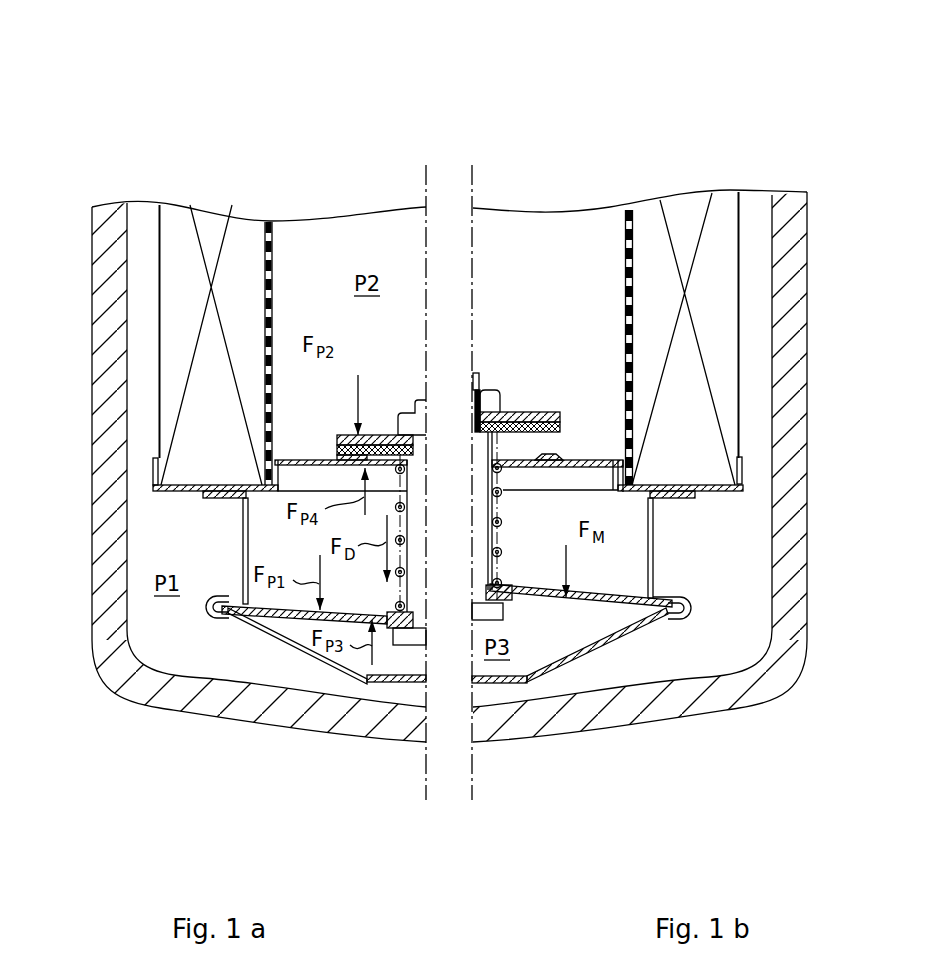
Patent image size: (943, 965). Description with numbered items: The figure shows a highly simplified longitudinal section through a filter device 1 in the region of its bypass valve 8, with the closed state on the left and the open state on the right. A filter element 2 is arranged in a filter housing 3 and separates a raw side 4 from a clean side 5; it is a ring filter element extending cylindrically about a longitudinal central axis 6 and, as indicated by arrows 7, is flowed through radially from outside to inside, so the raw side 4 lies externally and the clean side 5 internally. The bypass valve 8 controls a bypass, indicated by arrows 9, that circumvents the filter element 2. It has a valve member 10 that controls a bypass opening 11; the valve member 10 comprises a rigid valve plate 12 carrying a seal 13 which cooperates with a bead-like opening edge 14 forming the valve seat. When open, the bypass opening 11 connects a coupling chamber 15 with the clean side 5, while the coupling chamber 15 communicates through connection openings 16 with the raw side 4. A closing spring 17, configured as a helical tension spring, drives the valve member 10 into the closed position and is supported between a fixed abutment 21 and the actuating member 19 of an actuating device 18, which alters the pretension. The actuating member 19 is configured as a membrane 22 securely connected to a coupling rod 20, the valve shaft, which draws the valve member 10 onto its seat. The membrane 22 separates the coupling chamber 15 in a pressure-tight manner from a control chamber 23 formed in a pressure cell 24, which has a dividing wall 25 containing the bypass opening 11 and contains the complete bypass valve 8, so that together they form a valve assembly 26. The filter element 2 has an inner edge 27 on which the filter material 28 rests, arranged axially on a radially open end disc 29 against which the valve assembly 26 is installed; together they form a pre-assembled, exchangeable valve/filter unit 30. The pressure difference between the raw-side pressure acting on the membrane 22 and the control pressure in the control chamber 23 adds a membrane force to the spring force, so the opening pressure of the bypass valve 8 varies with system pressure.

In FIG. 1a, the filter device 1 is at (197, 117).
In FIG. 1b, the filter element 2 is at (745, 233).
In FIG. 1a, the filter housing 3 is at (100, 268).
In FIG. 1a, the raw side 4 is at (132, 328).
In FIG. 1b, the clean side 5 is at (505, 288).
In FIG. 1a, the longitudinal central axis 6 is at (426, 172).
In FIG. 1b, the longitudinal central axis 6 is at (472, 172).
In FIG. 1a, the arrows 7 is at (194, 296).
In FIG. 1a, the bypass valve 8 is at (197, 618).
In FIG. 1b, the arrows 9 is at (668, 476).
In FIG. 1a, the valve member 10 is at (383, 434).
In FIG. 1b, the bypass opening 11 is at (512, 458).
In FIG. 1b, the valve plate 12 is at (553, 412).
In FIG. 1b, the seal 13 is at (556, 428).
In FIG. 1b, the opening edge 14 is at (523, 457).
In FIG. 1b, the coupling chamber 15 is at (638, 615).
In FIG. 1a, the connection openings 16 is at (243, 537).
In FIG. 1b, the closing spring 17 is at (502, 522).
In FIG. 1a, the actuating device 18 is at (297, 704).
In FIG. 1b, the actuating member 19 is at (602, 691).
In FIG. 1b, the coupling rod 20 is at (488, 572).
In FIG. 1b, the abutment 21 is at (497, 456).
In FIG. 1b, the membrane 22 is at (573, 606).
In FIG. 1b, the control chamber 23 is at (540, 652).
In FIG. 1a, the pressure cell 24 is at (328, 663).
In FIG. 1a, the dividing wall 25 is at (297, 460).
In FIG. 1a, the valve assembly 26 is at (396, 683).
In FIG. 1b, the inner edge 27 is at (627, 220).
In FIG. 1b, the filter material 28 is at (688, 198).
In FIG. 1a, the end disc 29 is at (156, 497).
In FIG. 1b, the valve/filter unit 30 is at (745, 290).